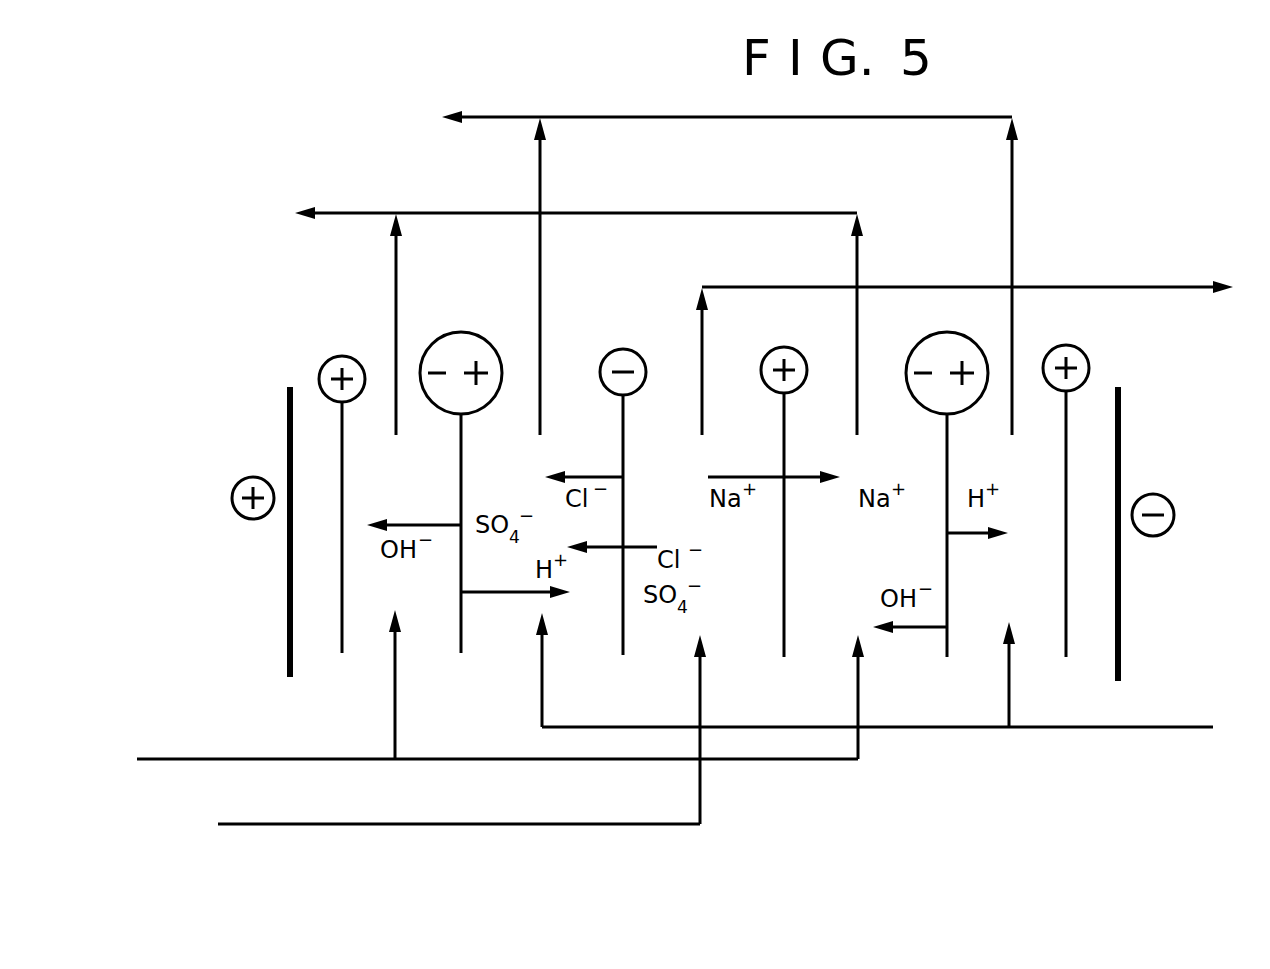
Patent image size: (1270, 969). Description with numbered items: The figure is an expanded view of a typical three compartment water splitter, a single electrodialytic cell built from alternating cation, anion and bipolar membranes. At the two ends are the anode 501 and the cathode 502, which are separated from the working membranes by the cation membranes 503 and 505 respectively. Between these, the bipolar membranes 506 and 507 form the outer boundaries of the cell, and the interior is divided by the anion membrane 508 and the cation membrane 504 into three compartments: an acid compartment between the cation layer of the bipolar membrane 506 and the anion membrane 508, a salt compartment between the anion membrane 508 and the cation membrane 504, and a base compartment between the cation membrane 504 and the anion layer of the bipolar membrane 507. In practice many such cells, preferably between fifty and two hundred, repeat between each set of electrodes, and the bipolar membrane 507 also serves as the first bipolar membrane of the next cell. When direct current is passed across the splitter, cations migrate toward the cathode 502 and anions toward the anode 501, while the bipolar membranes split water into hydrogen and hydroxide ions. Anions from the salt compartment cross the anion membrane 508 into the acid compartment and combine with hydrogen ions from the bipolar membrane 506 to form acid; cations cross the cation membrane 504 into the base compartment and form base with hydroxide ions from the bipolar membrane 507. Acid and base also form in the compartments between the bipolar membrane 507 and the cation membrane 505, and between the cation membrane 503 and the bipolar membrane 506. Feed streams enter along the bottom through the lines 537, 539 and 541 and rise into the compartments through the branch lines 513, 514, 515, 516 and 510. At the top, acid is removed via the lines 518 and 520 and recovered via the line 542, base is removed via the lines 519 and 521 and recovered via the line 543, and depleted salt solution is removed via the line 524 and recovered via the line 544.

The anode 501 is at (290, 463).
The cathode 502 is at (1118, 475).
The cation membrane 503 is at (342, 420).
The cation membrane 504 is at (784, 417).
The cation membrane 505 is at (1066, 408).
The bipolar membrane 506 is at (461, 443).
The bipolar membrane 507 is at (947, 475).
The anion membrane 508 is at (623, 425).
The feed inlet line 510 is at (700, 782).
The inlet line 513 is at (395, 660).
The inlet line 514 is at (542, 680).
The inlet line 515 is at (858, 680).
The inlet line 516 is at (1009, 662).
The line 518 is at (540, 163).
The line 519 is at (396, 250).
The line 520 is at (1012, 220).
The line 521 is at (858, 247).
The line 524 is at (700, 322).
The feed line 537 is at (283, 759).
The feed line 539 is at (425, 824).
The feed line 541 is at (1143, 728).
The line 542 is at (487, 113).
The line 543 is at (340, 207).
The line 544 is at (1077, 285).